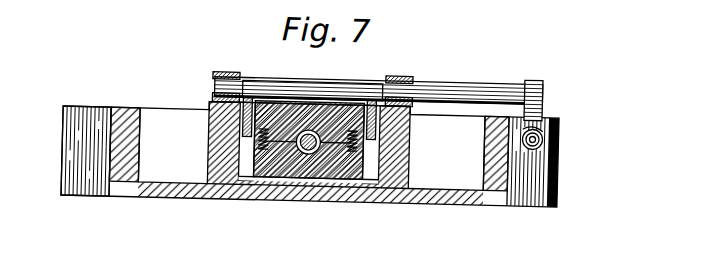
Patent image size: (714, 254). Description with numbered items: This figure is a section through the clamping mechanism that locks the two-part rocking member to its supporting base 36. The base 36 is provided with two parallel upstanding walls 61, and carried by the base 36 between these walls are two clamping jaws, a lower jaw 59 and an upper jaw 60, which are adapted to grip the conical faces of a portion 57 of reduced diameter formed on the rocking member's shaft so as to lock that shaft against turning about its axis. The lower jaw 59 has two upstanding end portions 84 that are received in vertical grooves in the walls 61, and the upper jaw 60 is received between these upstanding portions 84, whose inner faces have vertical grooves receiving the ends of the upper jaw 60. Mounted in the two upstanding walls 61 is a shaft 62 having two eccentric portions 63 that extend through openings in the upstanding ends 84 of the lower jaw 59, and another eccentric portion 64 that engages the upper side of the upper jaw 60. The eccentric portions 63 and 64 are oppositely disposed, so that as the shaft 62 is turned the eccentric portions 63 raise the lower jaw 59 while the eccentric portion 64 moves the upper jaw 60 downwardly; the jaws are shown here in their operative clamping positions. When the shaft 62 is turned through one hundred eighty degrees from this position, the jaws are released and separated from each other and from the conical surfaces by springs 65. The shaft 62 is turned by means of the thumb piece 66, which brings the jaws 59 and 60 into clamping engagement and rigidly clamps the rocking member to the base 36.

The supporting base 36 is at (71, 152).
The portion of reduced diameter 57 is at (307, 144).
The lower clamping jaw 59 is at (329, 146).
The upper clamping jaw 60 is at (282, 110).
The upstanding walls 61 is at (218, 126).
The shaft 62 is at (459, 83).
The eccentric portions 63 is at (252, 76).
The eccentric portion 64 is at (305, 78).
The springs 65 is at (264, 145).
The thumb piece 66 is at (553, 128).
The upstanding end portions 84 is at (220, 98).